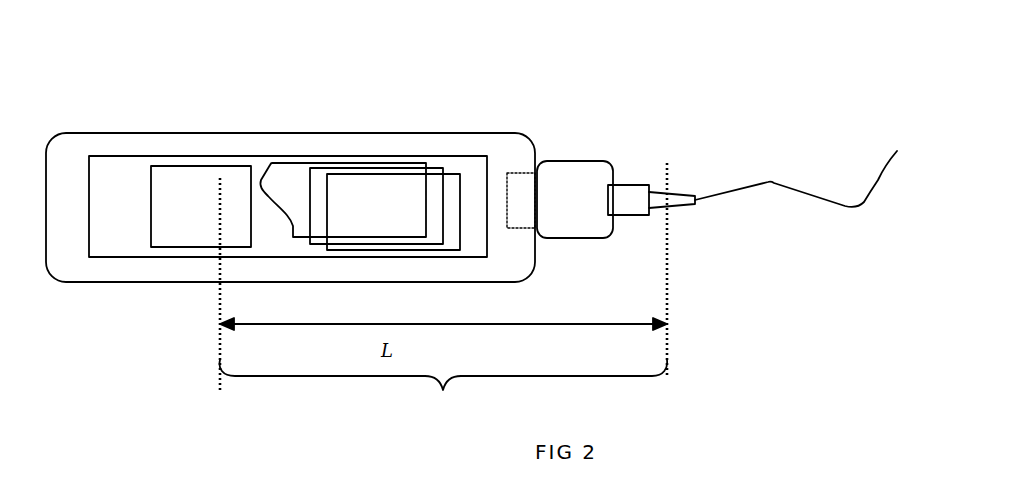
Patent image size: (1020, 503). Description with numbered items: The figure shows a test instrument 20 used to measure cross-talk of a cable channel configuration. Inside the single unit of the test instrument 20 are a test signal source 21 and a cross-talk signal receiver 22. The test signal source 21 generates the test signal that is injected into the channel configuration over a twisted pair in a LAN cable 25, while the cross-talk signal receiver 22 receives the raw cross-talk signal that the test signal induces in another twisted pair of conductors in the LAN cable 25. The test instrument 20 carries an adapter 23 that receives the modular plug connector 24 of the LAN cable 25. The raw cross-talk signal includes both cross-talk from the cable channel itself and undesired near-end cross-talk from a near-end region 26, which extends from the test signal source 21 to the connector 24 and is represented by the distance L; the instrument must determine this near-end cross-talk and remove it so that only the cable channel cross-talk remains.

The test instrument 20 is at (368, 95).
The test signal source 21 is at (201, 154).
The cross-talk signal receiver 22 is at (185, 166).
The adapter 23 is at (565, 161).
The RJ-45 connector 24 is at (617, 185).
The LAN cable 25 is at (799, 191).
The near-end region 26 is at (444, 389).